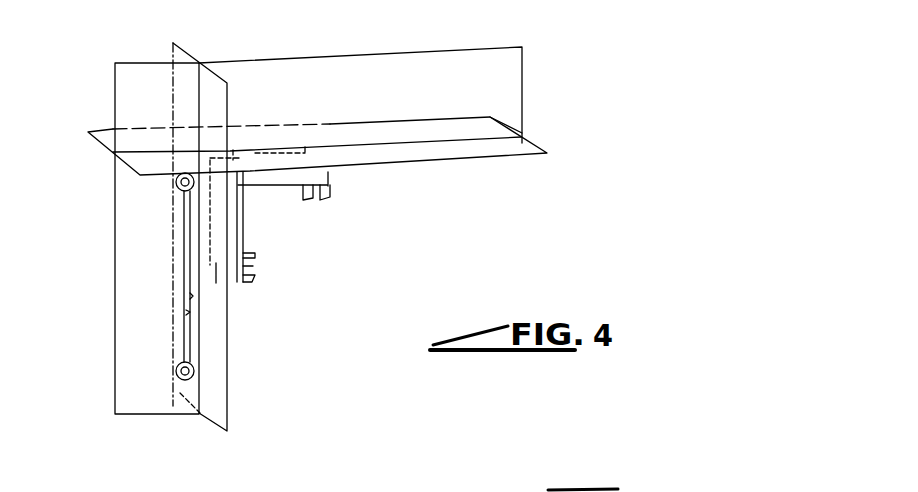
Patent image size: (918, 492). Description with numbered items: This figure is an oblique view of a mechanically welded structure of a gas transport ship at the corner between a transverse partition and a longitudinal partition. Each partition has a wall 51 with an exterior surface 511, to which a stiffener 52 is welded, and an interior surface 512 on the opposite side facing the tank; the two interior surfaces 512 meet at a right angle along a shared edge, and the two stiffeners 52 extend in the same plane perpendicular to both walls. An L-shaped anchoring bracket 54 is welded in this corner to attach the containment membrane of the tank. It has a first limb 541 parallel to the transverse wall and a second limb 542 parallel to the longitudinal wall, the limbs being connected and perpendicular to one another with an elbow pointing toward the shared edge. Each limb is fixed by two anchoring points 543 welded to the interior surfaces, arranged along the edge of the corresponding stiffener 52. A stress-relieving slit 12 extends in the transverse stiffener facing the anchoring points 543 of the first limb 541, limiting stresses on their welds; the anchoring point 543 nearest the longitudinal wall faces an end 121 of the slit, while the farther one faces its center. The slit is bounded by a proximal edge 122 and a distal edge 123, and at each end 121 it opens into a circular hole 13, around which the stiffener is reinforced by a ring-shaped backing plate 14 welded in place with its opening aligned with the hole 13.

The stress-relieving slit 12 is at (187, 230).
The end of the stress-relieving slit 121 is at (186, 196).
The proximal longitudinal edge 122 is at (190, 295).
The distal longitudinal edge 123 is at (188, 312).
The circular hole 13 is at (176, 182).
The backing plate 14 is at (187, 174).
The wall 51 is at (502, 168).
The exterior surface 511 is at (525, 134).
The interior surface 512 is at (423, 157).
The stiffener 52 is at (493, 88).
The anchoring bracket 54 is at (349, 236).
The first limb 541 is at (213, 275).
The second limb 542 is at (330, 171).
The anchoring point 543 is at (256, 148).